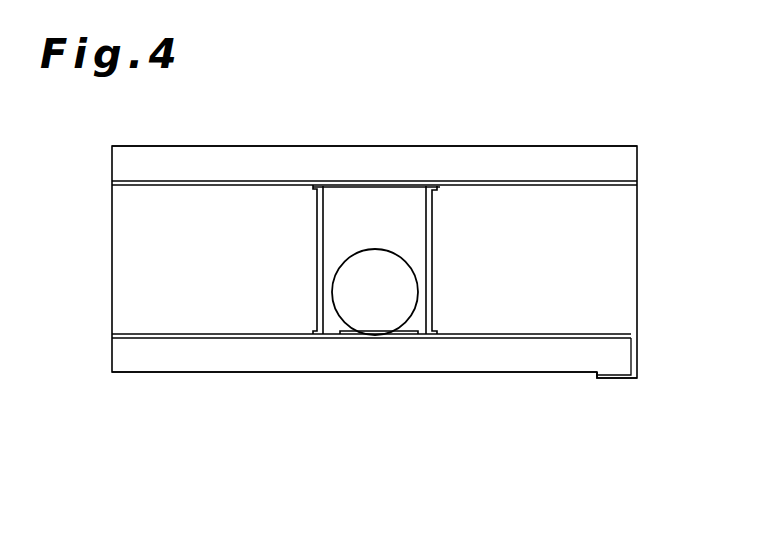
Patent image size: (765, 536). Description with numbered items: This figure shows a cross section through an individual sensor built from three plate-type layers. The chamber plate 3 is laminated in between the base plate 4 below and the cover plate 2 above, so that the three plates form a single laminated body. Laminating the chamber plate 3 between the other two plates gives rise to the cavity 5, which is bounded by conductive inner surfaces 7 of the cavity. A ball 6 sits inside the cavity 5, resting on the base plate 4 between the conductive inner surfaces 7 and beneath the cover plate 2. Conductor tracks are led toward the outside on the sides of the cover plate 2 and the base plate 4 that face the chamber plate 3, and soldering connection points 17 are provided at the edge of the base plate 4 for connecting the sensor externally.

The cover plate 2 is at (575, 158).
The chamber plate 3 is at (615, 245).
The base plate 4 is at (218, 357).
The cavity 5 is at (358, 215).
The ball 6 is at (378, 312).
The inner surfaces of the cavity 7 is at (420, 220).
The soldering connection points 17 is at (615, 378).